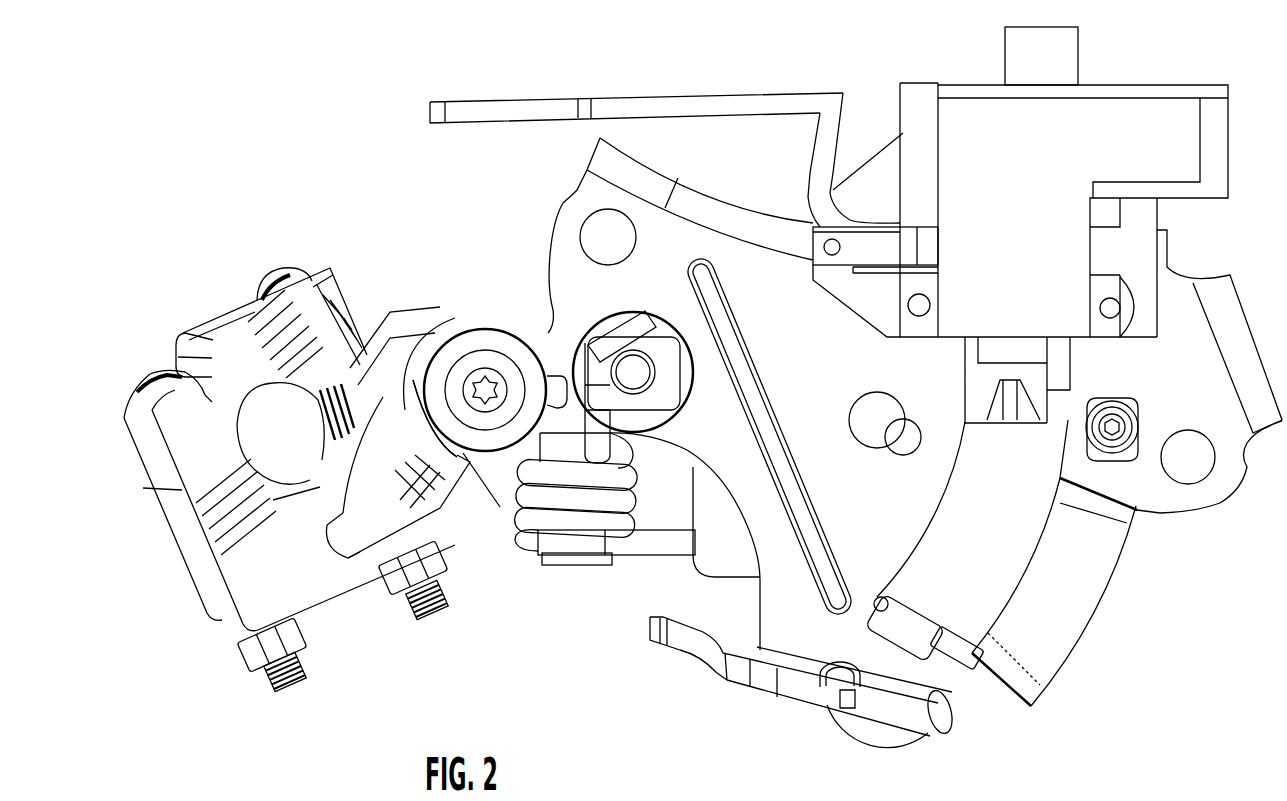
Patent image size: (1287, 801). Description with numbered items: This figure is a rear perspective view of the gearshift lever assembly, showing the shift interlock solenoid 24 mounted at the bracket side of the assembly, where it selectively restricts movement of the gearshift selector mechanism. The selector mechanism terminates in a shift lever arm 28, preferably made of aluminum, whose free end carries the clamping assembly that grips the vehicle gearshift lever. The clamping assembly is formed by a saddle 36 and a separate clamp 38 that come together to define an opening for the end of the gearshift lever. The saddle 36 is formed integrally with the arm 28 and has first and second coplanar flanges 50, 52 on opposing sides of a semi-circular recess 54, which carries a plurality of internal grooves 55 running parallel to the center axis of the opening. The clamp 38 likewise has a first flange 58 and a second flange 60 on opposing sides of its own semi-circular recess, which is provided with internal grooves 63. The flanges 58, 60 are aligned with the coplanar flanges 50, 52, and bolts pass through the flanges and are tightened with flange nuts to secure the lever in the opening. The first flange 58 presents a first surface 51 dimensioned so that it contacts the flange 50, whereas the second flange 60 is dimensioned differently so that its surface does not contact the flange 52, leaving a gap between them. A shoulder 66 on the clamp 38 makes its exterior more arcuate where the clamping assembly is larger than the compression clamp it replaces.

The shift interlock solenoid 24 is at (532, 572).
The shift lever arm 28 is at (284, 458).
The saddle 36 is at (207, 613).
The clamp 38 is at (348, 295).
The first coplanar flange 50 is at (193, 525).
The first surface 51 is at (197, 480).
The second coplanar flange 52 is at (352, 368).
The semi-circular recess 54 is at (319, 493).
The internal grooves 55 is at (323, 458).
The first flange 58 is at (305, 334).
The second flange 60 is at (175, 413).
The internal grooves 63 is at (254, 404).
The shoulder 66 is at (137, 417).